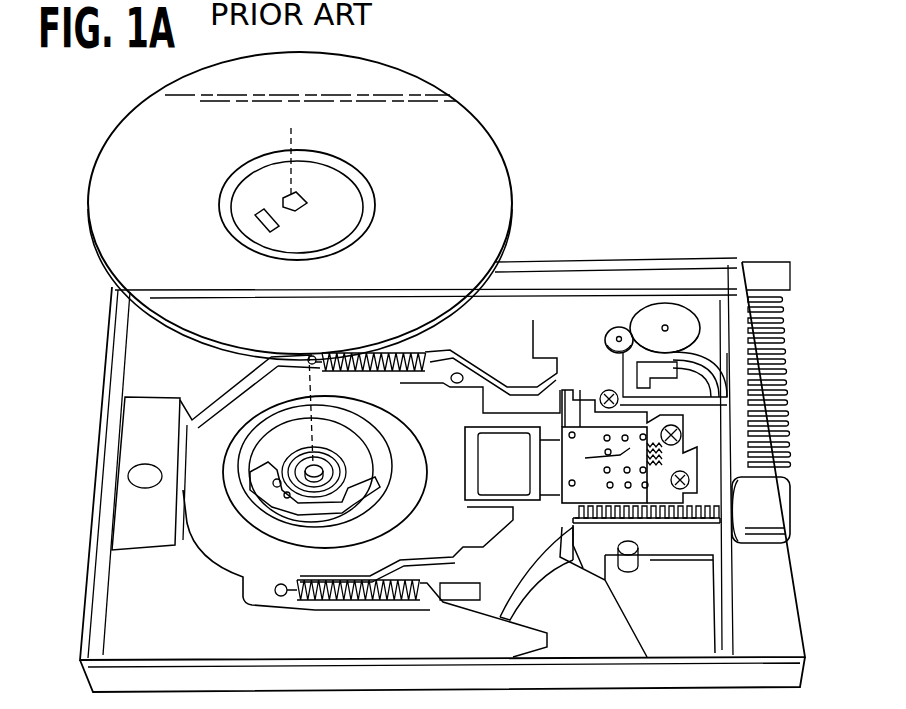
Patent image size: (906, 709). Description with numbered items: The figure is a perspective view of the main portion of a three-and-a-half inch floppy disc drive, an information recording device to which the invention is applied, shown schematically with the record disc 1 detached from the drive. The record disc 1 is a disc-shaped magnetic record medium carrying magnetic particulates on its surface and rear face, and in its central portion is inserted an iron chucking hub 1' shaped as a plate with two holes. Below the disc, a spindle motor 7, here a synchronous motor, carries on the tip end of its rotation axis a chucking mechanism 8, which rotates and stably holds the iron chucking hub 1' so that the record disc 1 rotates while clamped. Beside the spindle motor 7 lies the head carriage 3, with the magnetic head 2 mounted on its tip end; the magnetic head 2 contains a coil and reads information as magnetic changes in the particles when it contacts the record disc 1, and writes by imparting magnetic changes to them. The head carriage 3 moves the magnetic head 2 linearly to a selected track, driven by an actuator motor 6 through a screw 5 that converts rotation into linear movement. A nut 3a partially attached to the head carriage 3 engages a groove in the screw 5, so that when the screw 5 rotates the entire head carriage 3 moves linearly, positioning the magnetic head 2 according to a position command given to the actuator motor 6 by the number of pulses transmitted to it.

The record disc 1 is at (316, 206).
The iron chucking hub 1' is at (379, 191).
The magnetic head 2 is at (502, 453).
The head carriage 3 is at (578, 437).
The nut 3a is at (677, 525).
The screw 5 is at (647, 527).
The actuator motor 6 is at (777, 502).
The spindle motor 7 is at (245, 428).
The chucking mechanism 8 is at (270, 495).